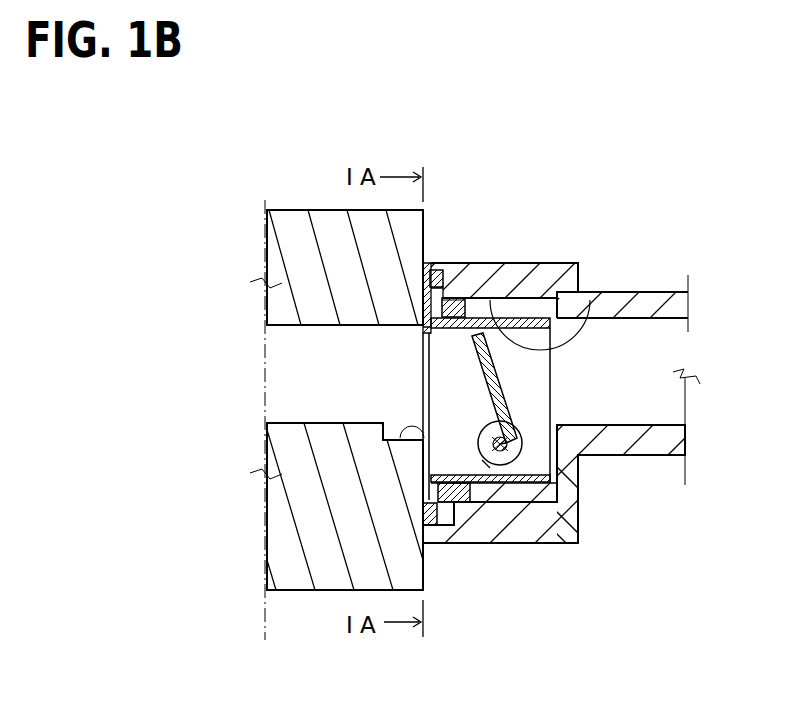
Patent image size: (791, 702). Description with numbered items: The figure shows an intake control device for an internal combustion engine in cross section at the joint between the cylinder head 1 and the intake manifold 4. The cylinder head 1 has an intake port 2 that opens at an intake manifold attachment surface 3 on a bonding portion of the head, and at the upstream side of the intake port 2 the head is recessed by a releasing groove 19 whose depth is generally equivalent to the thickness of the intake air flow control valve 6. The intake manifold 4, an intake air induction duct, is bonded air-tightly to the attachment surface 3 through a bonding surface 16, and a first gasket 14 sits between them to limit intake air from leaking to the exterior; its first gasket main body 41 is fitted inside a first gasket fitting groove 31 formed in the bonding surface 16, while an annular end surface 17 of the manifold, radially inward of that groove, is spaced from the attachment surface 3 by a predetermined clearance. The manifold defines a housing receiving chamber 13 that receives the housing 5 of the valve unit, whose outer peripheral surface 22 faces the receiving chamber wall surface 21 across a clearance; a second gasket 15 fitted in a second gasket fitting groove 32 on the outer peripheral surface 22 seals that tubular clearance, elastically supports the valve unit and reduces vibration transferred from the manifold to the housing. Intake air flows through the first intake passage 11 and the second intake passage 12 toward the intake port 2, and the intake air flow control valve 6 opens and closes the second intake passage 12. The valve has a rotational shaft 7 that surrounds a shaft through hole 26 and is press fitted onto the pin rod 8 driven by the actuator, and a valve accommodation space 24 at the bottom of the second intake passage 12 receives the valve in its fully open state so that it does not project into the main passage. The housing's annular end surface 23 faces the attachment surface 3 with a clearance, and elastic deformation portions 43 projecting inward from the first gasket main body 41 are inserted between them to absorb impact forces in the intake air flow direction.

The cylinder head 1 is at (285, 211).
The intake port 2 is at (333, 392).
The intake manifold attachment surface 3 is at (427, 262).
The intake manifold 4 is at (650, 292).
The housing 5 is at (568, 525).
The intake air flow control valve 6 is at (505, 378).
The rotational shaft 7 is at (524, 445).
The pin rod 8 is at (545, 515).
The first intake passage 11 is at (599, 387).
The second intake passage 12 is at (488, 466).
The housing receiving chamber 13 is at (515, 275).
The first gasket 14 is at (497, 212).
The first gasket main body 41 is at (447, 270).
The second gasket 15 is at (448, 589).
The bonding surface 16 is at (422, 527).
The annular end surface 17 is at (422, 523).
The releasing groove 19 is at (452, 486).
The receiving chamber wall surface 21 is at (584, 310).
The outer peripheral surface 22 is at (503, 298).
The annular end surface 23 is at (422, 505).
The valve accommodation space 24 is at (527, 466).
The shaft through hole 26 is at (505, 468).
The first gasket fitting groove 31 is at (415, 280).
The second gasket fitting groove 32 is at (458, 297).
The elastic deformation portion 43 is at (445, 304).